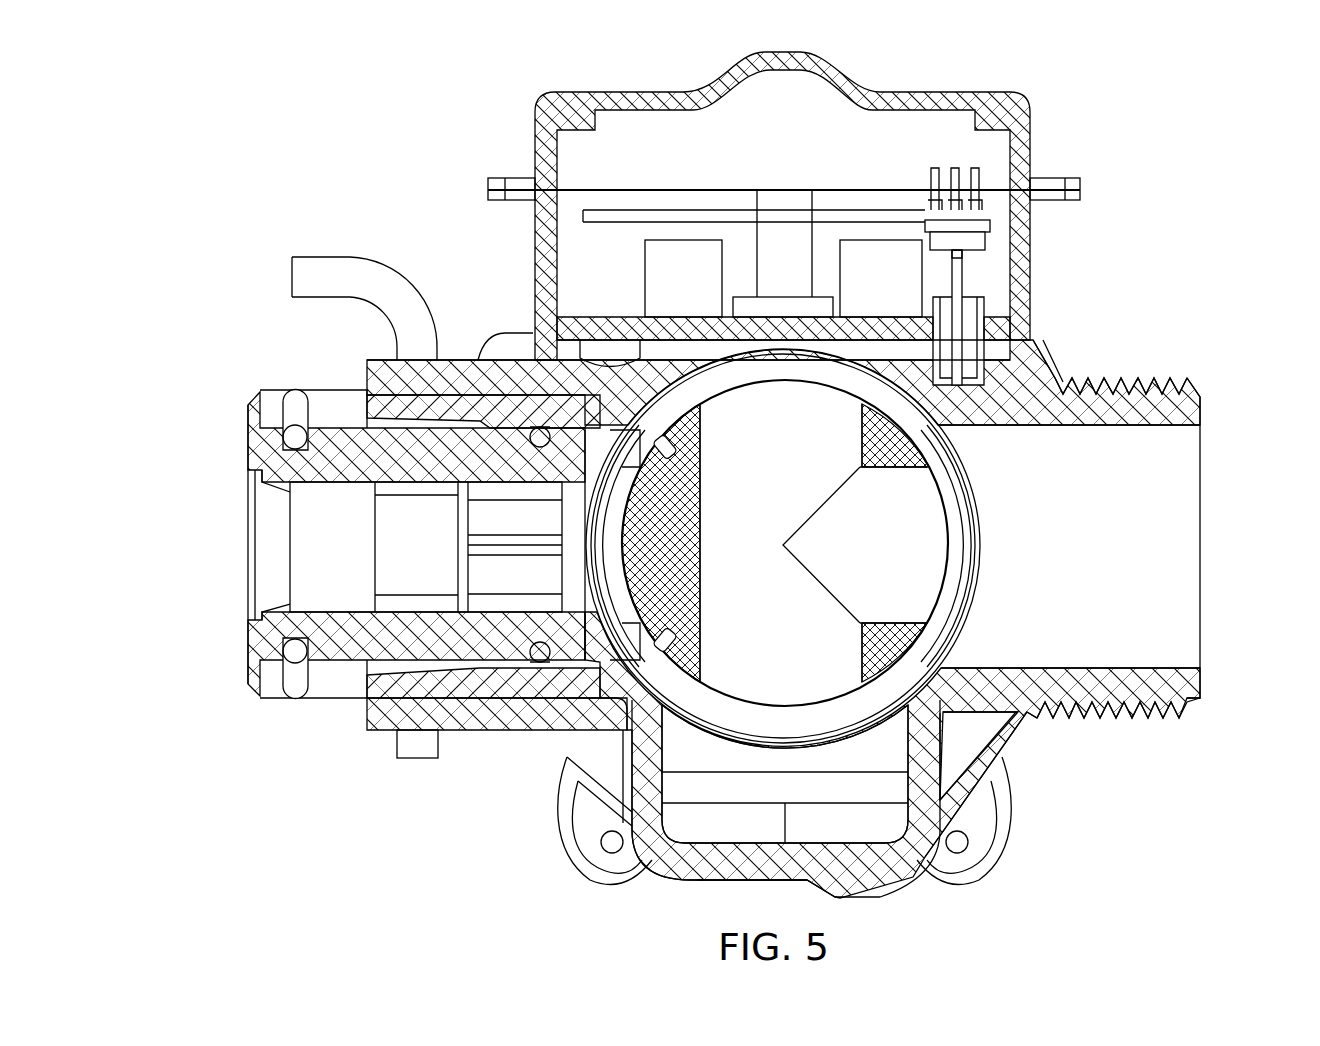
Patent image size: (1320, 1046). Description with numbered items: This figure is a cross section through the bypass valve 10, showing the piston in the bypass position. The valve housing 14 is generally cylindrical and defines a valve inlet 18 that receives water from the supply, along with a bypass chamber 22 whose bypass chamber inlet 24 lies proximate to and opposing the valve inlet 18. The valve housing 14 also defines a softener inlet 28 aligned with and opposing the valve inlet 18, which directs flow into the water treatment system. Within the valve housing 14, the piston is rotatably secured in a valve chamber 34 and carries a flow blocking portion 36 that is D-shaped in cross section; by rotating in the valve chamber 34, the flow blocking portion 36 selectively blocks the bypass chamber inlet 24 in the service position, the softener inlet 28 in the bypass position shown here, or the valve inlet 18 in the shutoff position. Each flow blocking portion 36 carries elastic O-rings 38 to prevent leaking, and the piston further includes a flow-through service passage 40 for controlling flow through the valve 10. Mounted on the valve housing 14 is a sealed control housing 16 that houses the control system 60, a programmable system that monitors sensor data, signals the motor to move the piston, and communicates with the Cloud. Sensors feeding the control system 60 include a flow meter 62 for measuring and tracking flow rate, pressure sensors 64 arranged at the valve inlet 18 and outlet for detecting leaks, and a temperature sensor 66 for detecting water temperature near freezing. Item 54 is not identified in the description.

The valve 10 is at (1102, 142).
The valve housing 14 is at (975, 398).
The control housing 16 is at (877, 102).
The valve inlet 18 is at (1073, 470).
The bypass chamber 22 is at (757, 812).
The bypass chamber inlet 24 is at (762, 720).
The softener inlet 28 is at (320, 570).
The valve chamber 34 is at (920, 377).
The flow blocking portion 36 is at (653, 537).
The O-rings 38 is at (655, 440).
The flow-through service passage 40 is at (771, 562).
The pins 54 is at (937, 243).
The control system 60 is at (725, 210).
The flow meter 62 is at (412, 532).
The pressure sensors 64 is at (962, 357).
The temperature sensor 66 is at (963, 272).